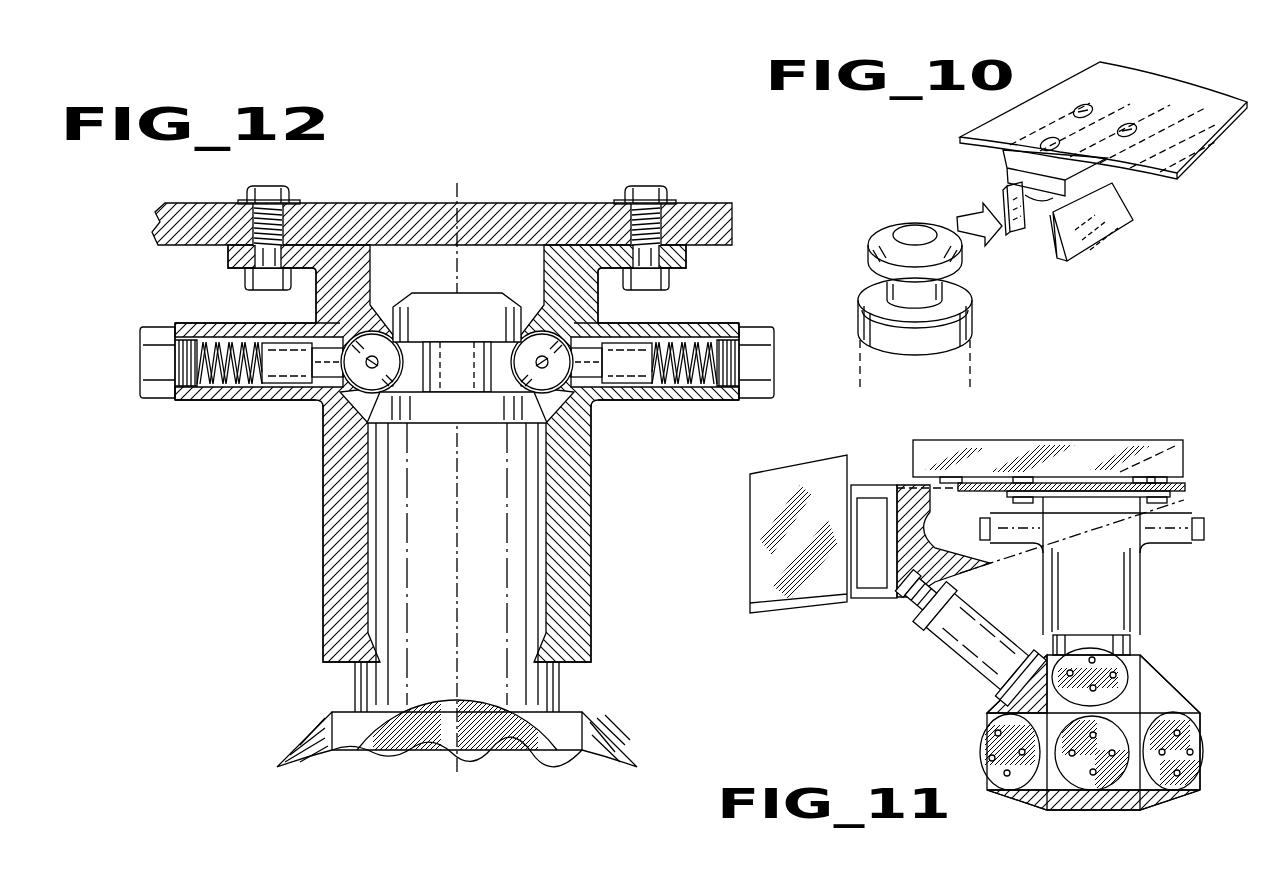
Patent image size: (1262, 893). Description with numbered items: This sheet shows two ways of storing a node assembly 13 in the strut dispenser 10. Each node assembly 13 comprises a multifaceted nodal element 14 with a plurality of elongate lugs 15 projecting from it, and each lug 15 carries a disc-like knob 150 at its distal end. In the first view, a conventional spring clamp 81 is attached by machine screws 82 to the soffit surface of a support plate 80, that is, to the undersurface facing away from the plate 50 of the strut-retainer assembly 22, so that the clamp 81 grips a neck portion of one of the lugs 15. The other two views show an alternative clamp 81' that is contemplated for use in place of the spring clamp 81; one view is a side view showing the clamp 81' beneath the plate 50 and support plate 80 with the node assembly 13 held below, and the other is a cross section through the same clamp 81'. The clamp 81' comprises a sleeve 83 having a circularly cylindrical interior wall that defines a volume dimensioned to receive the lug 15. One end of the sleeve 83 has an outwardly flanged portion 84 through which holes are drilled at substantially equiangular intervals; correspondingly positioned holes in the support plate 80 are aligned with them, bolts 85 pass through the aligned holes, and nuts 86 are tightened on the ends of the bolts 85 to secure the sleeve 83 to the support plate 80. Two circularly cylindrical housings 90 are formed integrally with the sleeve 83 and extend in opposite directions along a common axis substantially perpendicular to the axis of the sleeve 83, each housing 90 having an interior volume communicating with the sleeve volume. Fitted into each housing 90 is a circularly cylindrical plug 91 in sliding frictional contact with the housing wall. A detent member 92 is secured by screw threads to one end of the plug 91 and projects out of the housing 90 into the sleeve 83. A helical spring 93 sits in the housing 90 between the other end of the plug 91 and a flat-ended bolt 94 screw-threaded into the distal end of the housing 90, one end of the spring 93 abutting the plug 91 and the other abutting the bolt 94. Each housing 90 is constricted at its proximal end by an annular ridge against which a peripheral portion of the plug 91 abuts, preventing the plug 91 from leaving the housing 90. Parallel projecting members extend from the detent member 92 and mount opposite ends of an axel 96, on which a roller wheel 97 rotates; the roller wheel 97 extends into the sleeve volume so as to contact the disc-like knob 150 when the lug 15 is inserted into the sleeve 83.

In FIG. 11, the strut dispenser 10 is at (742, 563).
In FIG. 12, the node assembly 13 is at (245, 356).
In FIG. 11, the node assembly 13 is at (952, 706).
In FIG. 12, the multifaceted nodal element 14 is at (597, 735).
In FIG. 11, the multifaceted nodal element 14 is at (1152, 686).
In FIG. 12, the elongate lug 15 is at (558, 683).
In FIG. 10, the elongate lug 15 is at (968, 309).
In FIG. 11, the elongate lug 15 is at (970, 637).
In FIG. 11, the strut-retainer assembly 22 is at (896, 444).
In FIG. 11, the plate 50 is at (1104, 440).
In FIG. 12, the support plate 80 is at (714, 247).
In FIG. 10, the support plate 80 is at (1158, 172).
In FIG. 11, the support plate 80 is at (978, 491).
In FIG. 10, the conventional spring clamp 81 is at (1079, 212).
In FIG. 12, the alternative clamp 81' is at (457, 453).
In FIG. 11, the alternative clamp 81' is at (1087, 566).
In FIG. 10, the machine screws 82 is at (1080, 114).
In FIG. 12, the sleeve 83 is at (322, 572).
In FIG. 12, the outwardly flanged portion 84 is at (224, 250).
In FIG. 12, the bolts 85 is at (272, 186).
In FIG. 12, the nuts 86 is at (247, 280).
In FIG. 12, the circularly cylindrical housing 90 is at (215, 402).
In FIG. 12, the circularly cylindrical plug 91 is at (287, 367).
In FIG. 12, the detent member 92 is at (324, 365).
In FIG. 12, the helical spring 93 is at (207, 346).
In FIG. 12, the flat-ended bolt 94 is at (143, 370).
In FIG. 12, the axel 96 is at (360, 348).
In FIG. 12, the roller wheel 97 is at (374, 334).
In FIG. 12, the disc-like knob 150 is at (470, 293).
In FIG. 10, the disc-like knob 150 is at (878, 232).
In FIG. 11, the disc-like knob 150 is at (903, 593).